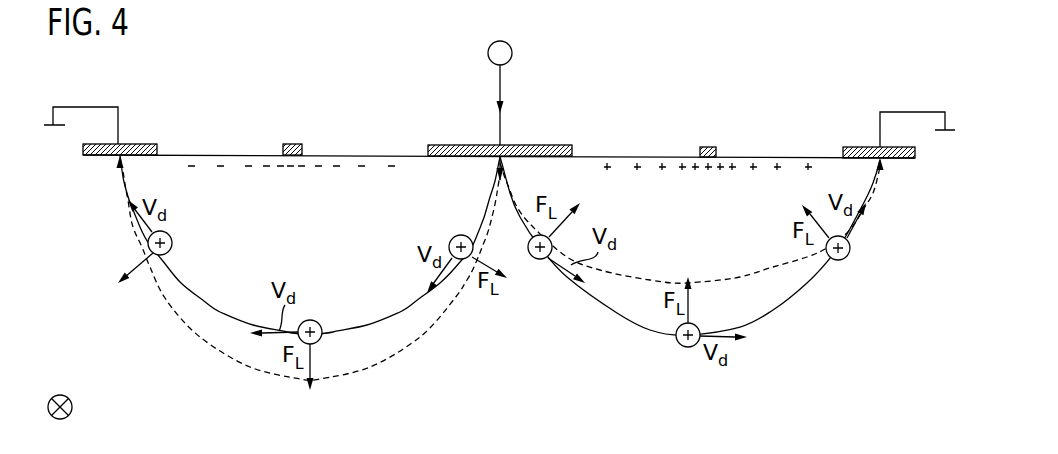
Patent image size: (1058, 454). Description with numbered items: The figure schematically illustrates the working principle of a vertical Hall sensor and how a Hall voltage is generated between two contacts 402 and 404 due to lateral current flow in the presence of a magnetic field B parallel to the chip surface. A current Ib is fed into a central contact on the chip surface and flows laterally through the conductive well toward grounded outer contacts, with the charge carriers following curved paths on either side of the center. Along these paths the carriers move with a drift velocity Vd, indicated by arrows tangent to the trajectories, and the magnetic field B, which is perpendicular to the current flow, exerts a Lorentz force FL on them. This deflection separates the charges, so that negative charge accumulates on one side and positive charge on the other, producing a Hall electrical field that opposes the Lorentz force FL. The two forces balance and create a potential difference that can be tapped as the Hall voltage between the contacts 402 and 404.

The contact 402 is at (706, 147).
The contact 404 is at (291, 144).
The drift velocity Vd is at (514, 57).
The bias current Ib is at (512, 105).
The Lorentz force FL is at (132, 257).
The magnetic field B is at (71, 408).